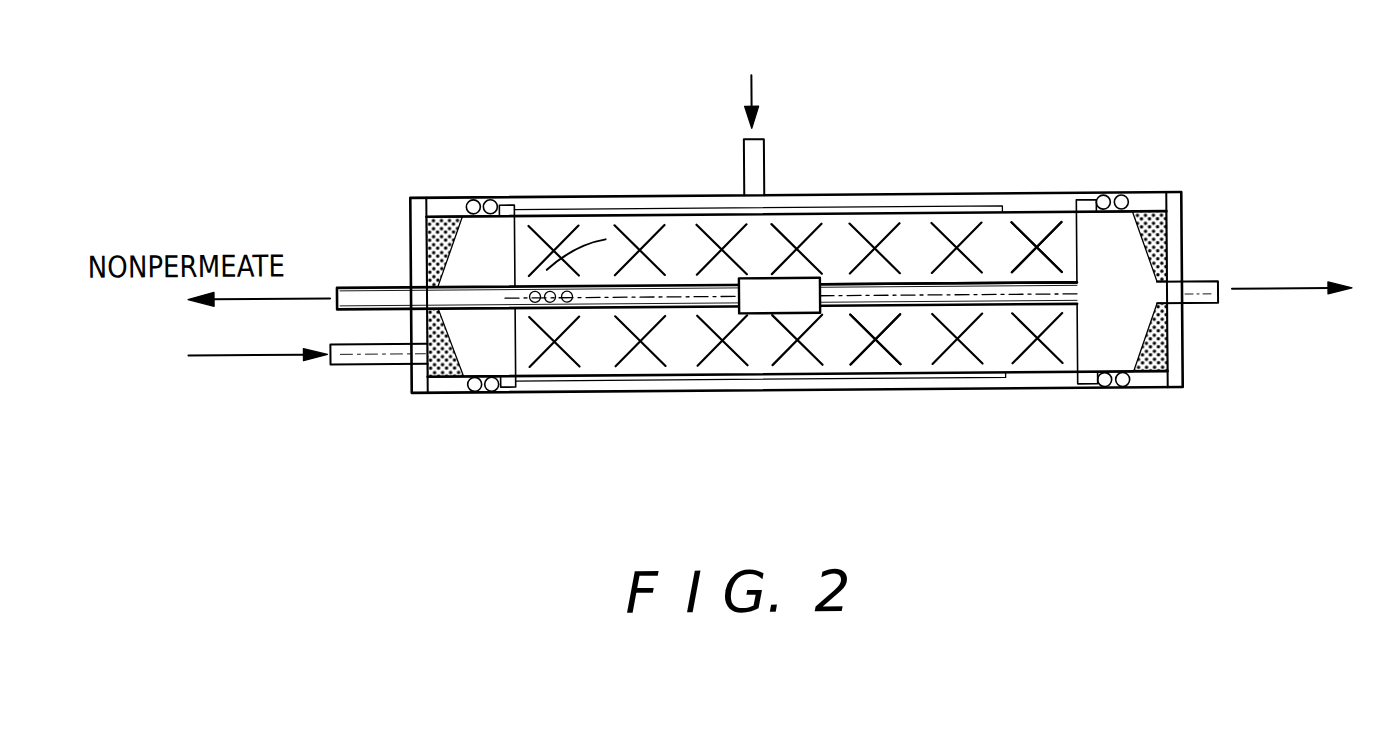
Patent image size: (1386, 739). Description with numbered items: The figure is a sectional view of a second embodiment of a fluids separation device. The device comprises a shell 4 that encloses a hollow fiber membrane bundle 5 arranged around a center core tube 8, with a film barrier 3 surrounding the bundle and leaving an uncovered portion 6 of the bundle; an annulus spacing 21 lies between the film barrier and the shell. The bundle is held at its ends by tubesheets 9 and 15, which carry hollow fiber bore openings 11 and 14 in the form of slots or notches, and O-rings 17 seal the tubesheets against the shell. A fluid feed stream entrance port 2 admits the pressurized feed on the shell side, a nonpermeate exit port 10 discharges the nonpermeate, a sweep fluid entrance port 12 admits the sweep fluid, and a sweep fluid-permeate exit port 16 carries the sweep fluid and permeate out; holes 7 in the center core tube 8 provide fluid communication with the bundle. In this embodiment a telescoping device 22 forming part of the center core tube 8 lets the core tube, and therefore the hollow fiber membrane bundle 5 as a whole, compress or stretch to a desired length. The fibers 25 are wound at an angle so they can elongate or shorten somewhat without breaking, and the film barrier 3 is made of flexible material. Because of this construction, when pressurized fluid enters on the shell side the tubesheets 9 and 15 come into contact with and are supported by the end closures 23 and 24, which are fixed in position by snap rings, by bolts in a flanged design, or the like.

The fluid feed stream entrance port 2 is at (764, 168).
The film barrier 3 is at (919, 206).
The shell 4 is at (983, 194).
The hollow fiber membrane bundle 5 is at (763, 358).
The uncovered portion of hollow fiber membrane bundle 6 is at (1038, 214).
The holes in center core tube 7 is at (563, 301).
The center core tube 8 is at (886, 288).
The tubesheet 9 is at (490, 353).
The nonpermeate exit port 10 is at (385, 285).
The hollow fiber bore openings 11 is at (443, 370).
The sweep fluid entrance port 12 is at (392, 359).
The hollow fiber bore openings 14 is at (1156, 360).
The tubesheet 15 is at (1116, 242).
The sweep fluid-permeate exit port 16 is at (1206, 310).
The O-rings 17 is at (493, 198).
The annulus spacing 21 is at (588, 206).
The telescoping device 22 is at (803, 290).
The end closure 23 is at (425, 200).
The end closure 24 is at (1183, 198).
The fibers 25 is at (877, 344).